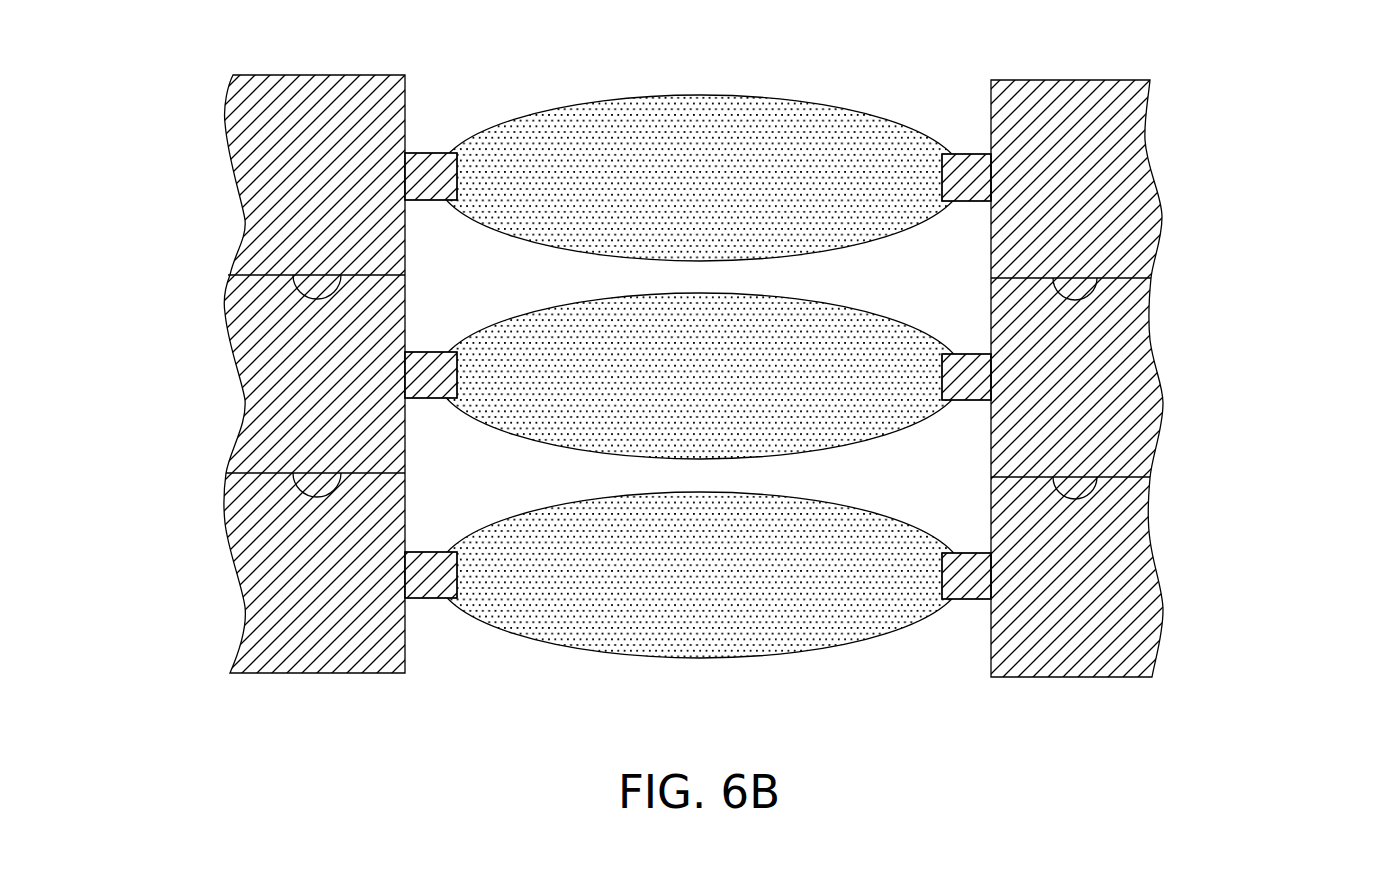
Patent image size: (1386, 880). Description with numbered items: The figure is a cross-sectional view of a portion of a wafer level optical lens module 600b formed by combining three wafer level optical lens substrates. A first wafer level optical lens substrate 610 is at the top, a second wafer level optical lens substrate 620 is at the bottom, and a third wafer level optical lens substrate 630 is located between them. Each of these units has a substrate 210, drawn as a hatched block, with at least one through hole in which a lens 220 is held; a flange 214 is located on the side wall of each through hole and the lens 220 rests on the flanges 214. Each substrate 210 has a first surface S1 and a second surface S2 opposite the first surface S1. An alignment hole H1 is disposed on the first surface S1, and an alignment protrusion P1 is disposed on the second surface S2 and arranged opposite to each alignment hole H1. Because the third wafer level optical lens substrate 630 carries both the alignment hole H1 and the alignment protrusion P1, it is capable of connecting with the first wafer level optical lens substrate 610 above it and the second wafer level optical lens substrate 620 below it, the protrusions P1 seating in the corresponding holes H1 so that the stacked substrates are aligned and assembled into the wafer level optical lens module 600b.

The lens 220 is at (810, 350).
The flange 214 is at (975, 172).
The substrate 210 is at (1125, 125).
The alignment hole H1 is at (313, 290).
The alignment protrusion P1 is at (334, 292).
The first surface S1 is at (1092, 78).
The second surface S2 is at (1137, 282).
The first wafer level optical lens substrate 610 is at (1194, 182).
The third wafer level optical lens substrate 630 is at (1202, 377).
The second wafer level optical lens substrate 620 is at (1190, 608).
The wafer level optical lens module 600b is at (1265, 779).